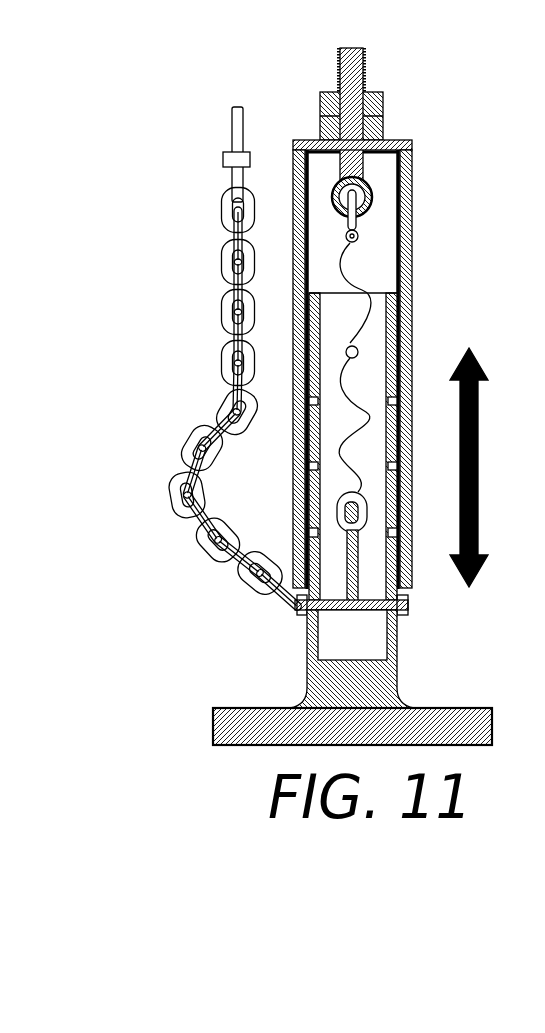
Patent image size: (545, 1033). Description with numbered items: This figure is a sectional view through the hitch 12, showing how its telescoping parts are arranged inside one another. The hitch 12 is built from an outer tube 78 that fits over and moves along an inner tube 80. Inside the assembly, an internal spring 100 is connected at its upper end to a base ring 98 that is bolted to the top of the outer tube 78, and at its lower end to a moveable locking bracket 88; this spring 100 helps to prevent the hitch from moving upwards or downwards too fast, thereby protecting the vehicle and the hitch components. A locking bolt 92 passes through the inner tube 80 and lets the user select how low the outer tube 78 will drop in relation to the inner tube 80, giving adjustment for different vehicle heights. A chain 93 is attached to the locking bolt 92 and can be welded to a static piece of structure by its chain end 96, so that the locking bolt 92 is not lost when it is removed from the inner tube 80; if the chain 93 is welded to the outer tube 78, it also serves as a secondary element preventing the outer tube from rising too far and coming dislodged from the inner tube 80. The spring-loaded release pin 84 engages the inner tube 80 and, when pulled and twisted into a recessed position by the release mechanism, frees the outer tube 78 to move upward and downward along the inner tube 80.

The hitch 12 is at (272, 92).
The chain end 96 is at (233, 130).
The chain 93 is at (197, 398).
The base ring 98 is at (372, 193).
The outer tube 78 is at (411, 266).
The release pin 84 is at (352, 431).
The internal spring 100 is at (357, 347).
The locking bolt 92 is at (409, 604).
The locking bracket 88 is at (358, 622).
The inner tube 80 is at (398, 632).